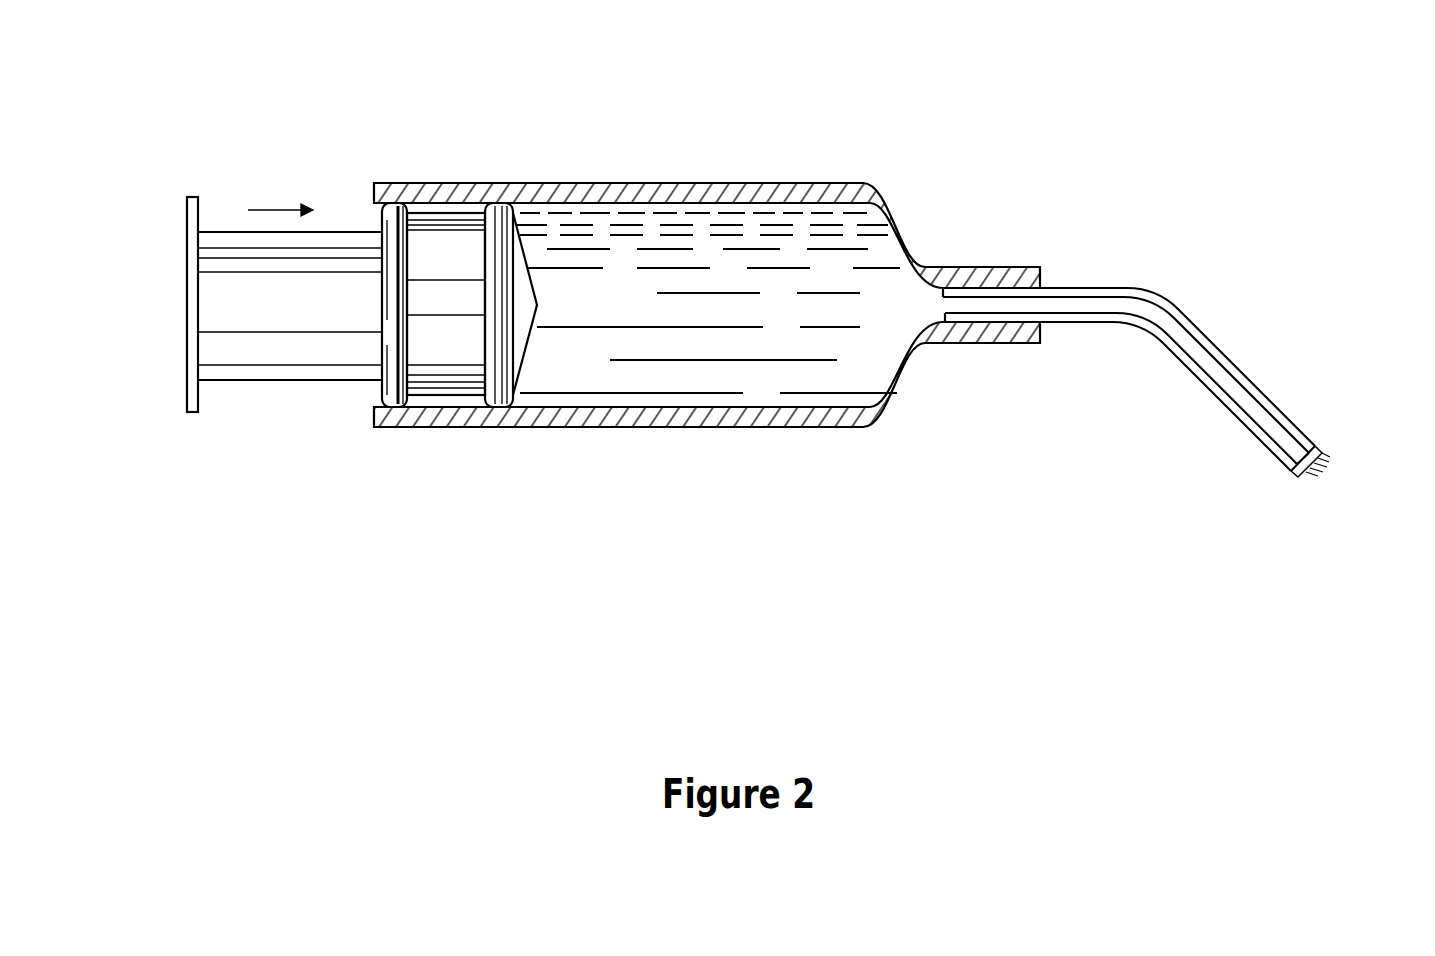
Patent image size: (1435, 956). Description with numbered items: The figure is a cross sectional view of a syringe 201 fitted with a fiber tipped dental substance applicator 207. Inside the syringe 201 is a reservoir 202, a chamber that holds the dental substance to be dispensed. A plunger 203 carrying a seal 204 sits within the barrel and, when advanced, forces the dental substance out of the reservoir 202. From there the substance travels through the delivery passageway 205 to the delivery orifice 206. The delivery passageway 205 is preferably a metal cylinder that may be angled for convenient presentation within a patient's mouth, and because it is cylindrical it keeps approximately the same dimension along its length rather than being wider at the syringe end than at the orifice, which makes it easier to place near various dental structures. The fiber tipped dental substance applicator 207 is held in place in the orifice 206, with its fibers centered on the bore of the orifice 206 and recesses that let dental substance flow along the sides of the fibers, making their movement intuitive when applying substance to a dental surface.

The syringe 201 is at (753, 145).
The reservoir 202 is at (710, 375).
The plunger 203 is at (238, 382).
The seal 204 is at (490, 378).
The delivery passageway 205 is at (1070, 315).
The delivery orifice 206 is at (1283, 452).
The fiber tipped dental substance applicator 207 is at (1325, 460).